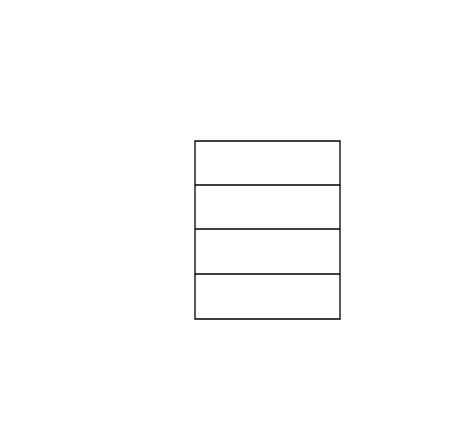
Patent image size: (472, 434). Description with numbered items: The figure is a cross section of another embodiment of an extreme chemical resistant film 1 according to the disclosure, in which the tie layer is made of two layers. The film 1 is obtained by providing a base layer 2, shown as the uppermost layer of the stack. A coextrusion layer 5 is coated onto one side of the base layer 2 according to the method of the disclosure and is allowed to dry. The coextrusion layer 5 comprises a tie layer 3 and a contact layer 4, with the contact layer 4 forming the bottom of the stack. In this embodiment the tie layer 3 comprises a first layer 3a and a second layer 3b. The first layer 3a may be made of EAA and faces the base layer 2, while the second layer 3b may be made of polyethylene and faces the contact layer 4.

The extreme chemical resistant film 1 is at (307, 108).
The base layer 2 is at (173, 140).
The tie layer 3 is at (186, 230).
The first layer 3a is at (170, 208).
The second layer 3b is at (186, 252).
The contact layer 4 is at (173, 307).
The coextrusion layer 5 is at (340, 208).